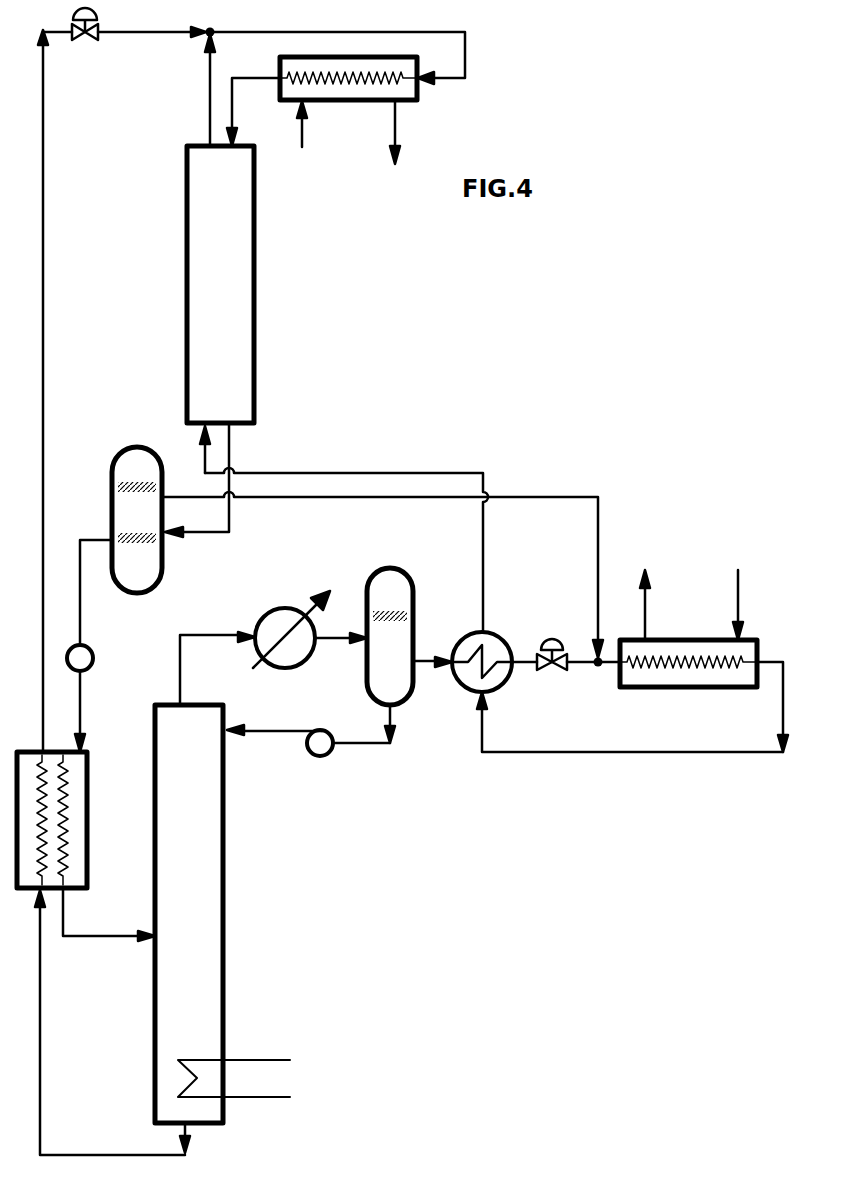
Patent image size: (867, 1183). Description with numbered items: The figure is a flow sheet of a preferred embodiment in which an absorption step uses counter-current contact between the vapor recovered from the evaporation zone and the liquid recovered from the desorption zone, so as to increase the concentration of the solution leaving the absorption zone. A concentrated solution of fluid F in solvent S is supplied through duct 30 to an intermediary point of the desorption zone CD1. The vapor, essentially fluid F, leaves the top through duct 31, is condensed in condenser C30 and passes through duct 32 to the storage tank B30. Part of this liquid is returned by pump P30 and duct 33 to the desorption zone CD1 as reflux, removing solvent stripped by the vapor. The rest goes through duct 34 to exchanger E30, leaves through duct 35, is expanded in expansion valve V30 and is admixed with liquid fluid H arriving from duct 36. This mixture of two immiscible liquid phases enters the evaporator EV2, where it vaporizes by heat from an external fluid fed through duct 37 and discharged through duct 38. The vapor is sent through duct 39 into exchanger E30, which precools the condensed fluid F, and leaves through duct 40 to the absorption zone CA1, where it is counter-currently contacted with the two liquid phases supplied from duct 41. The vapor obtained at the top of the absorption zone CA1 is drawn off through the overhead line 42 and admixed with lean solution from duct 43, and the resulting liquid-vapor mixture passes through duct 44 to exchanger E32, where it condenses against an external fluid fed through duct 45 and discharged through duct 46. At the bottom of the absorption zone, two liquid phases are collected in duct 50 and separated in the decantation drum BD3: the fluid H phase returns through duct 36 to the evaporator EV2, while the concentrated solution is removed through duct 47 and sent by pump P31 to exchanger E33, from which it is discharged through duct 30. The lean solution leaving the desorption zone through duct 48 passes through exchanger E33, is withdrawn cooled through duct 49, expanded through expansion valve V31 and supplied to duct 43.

The duct 30 is at (89, 938).
The duct 31 is at (180, 650).
The duct 32 is at (332, 641).
The duct 33 is at (277, 733).
The duct 34 is at (425, 665).
The duct 35 is at (520, 658).
The duct 36 is at (361, 499).
The duct 37 is at (737, 582).
The duct 38 is at (650, 582).
The duct 39 is at (480, 744).
The duct 40 is at (326, 471).
The duct 41 is at (252, 77).
The CA1 overhead line 42 is at (207, 112).
The duct 43 is at (147, 34).
The duct 44 is at (467, 65).
The duct 45 is at (302, 147).
The duct 46 is at (389, 149).
The duct 47 is at (82, 620).
The duct 48 is at (41, 1067).
The duct 49 is at (45, 256).
The duct 50 is at (231, 527).
The expansion valve V31 is at (86, 40).
The expansion valve V30 is at (555, 671).
The absorption zone CA1 is at (185, 290).
The desorption zone CD1 is at (227, 884).
The exchanger E32 is at (350, 101).
The exchanger E33 is at (88, 813).
The exchanger E30 is at (508, 683).
The evaporator EV2 is at (697, 689).
The decantation drum BD3 is at (163, 568).
The storage tank B30 is at (415, 600).
The condenser C30 is at (270, 611).
The pump P31 is at (93, 658).
The pump P30 is at (320, 757).